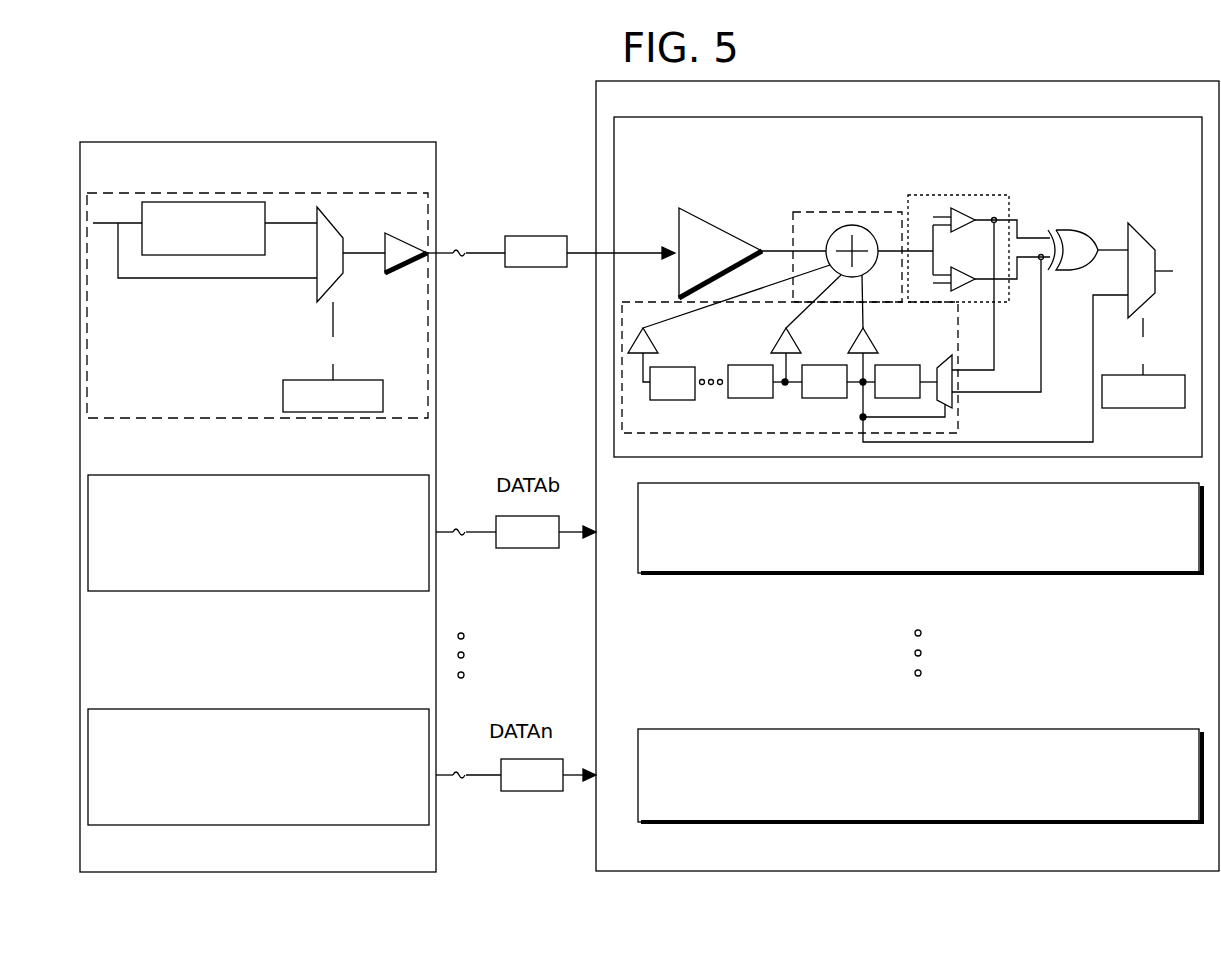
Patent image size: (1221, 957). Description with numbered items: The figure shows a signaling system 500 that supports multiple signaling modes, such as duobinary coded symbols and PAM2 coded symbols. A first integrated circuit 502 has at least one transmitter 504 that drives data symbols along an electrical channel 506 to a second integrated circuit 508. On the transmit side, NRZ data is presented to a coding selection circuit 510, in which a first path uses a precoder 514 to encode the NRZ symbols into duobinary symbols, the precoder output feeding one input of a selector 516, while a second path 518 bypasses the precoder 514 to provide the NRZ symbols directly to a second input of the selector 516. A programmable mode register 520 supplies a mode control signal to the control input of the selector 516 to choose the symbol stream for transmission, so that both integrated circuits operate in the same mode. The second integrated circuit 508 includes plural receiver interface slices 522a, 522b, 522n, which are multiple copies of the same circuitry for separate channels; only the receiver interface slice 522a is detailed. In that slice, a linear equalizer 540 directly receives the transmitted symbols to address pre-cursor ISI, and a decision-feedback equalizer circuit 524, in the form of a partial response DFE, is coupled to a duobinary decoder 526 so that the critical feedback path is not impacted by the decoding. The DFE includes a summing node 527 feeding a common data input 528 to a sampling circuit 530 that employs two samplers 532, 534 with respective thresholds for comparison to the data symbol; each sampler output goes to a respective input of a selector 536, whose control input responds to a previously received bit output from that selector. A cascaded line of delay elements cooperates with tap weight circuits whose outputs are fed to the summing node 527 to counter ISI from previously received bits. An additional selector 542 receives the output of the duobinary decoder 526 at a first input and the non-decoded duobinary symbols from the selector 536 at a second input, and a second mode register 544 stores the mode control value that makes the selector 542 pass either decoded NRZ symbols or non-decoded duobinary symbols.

The signaling system 500 is at (198, 121).
The first integrated circuit 502 is at (258, 492).
The transmitter 504 is at (418, 241).
The electrical channel 506 is at (536, 268).
The second integrated circuit 508 is at (908, 476).
The coding selection circuit 510 is at (283, 192).
The precoder 514 is at (205, 228).
The selector 516 is at (341, 273).
The second path 518 is at (212, 256).
The programmable mode register 520 is at (333, 388).
The receiver interface slice 522a is at (908, 287).
The receiver interface slice 522b is at (920, 528).
The receiver interface slice 522n is at (920, 775).
The decision-feedback equalizer circuit 524 is at (961, 431).
The duobinary decoder 526 is at (1067, 231).
The summing node 527 is at (850, 225).
The common data input 528 is at (935, 249).
The sampling circuit 530 is at (988, 194).
The sampler 532 is at (960, 206).
The sampler 534 is at (966, 291).
The selector 536 is at (943, 357).
The linear equalizer 540 is at (717, 224).
The additional selector 542 is at (1141, 235).
The second mode register 544 is at (1143, 386).